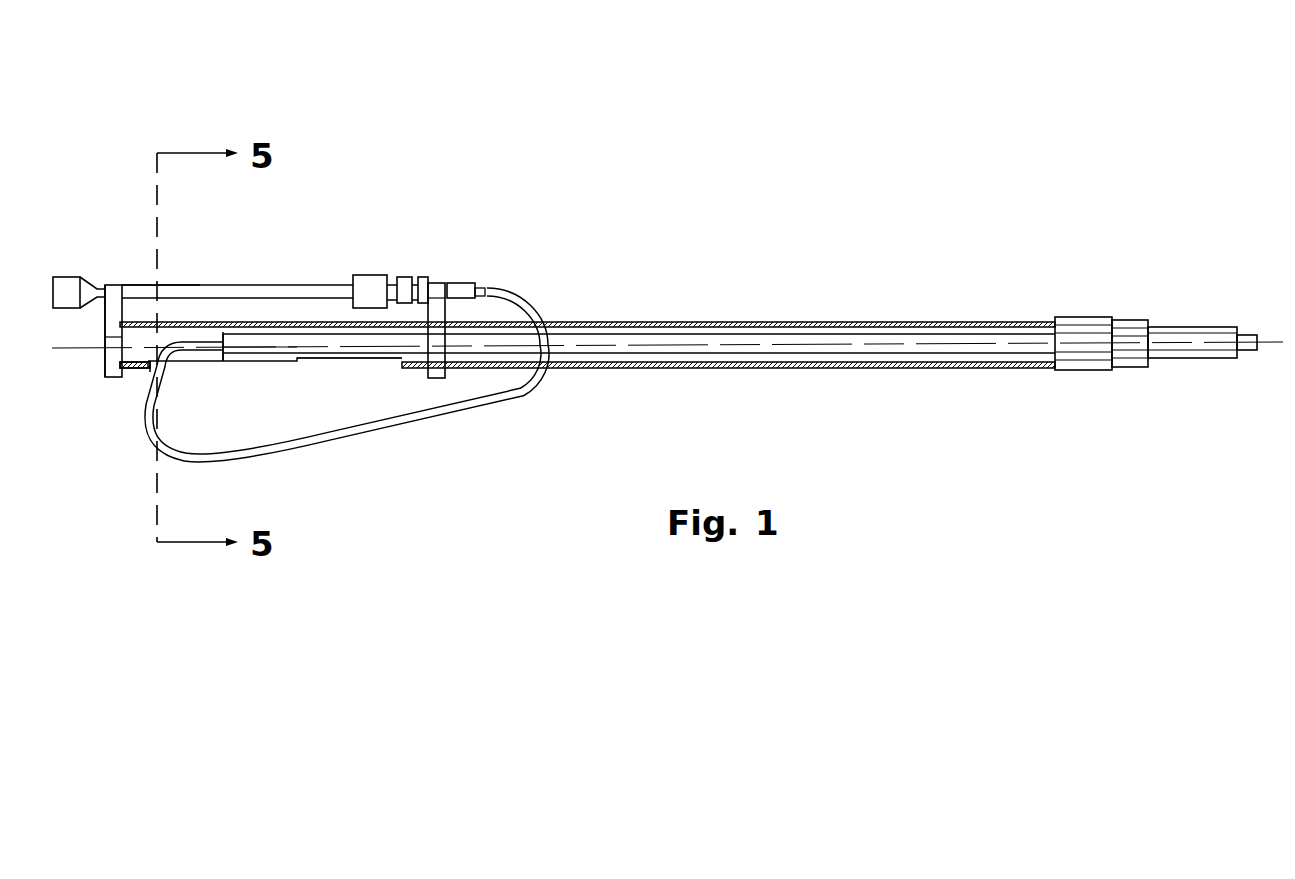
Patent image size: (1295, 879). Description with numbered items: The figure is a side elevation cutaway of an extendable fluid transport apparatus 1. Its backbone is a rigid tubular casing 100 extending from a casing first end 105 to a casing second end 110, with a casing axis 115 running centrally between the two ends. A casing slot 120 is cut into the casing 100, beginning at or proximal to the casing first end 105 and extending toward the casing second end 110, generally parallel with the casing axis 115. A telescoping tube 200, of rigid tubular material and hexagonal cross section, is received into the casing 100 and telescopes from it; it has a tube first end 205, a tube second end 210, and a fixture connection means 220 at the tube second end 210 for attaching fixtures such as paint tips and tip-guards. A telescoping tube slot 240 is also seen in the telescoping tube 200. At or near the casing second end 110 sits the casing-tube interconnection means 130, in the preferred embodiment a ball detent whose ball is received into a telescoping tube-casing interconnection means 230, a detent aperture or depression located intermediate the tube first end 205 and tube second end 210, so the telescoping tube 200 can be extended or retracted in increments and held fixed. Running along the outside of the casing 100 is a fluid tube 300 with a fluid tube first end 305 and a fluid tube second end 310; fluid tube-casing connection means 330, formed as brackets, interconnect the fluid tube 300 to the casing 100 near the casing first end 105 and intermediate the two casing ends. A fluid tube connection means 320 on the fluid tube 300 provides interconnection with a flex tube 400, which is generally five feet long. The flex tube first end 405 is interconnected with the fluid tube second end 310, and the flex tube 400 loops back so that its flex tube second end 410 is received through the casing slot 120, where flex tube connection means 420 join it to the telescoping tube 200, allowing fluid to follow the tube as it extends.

The extendable fluid transport apparatus 1 is at (952, 138).
The tubular casing 100 is at (767, 322).
The casing first end 105 is at (140, 375).
The casing second end 110 is at (980, 322).
The casing axis 115 is at (92, 347).
The casing slot 120 is at (317, 363).
The casing-tube interconnection means 130 is at (1045, 368).
The telescoping tube 200 is at (750, 355).
The tube first end 205 is at (228, 365).
The tube second end 210 is at (1227, 330).
The fixture connection means 220 is at (1252, 335).
The telescoping tube-casing interconnection means 230 is at (1083, 370).
The telescoping tube slot 240 is at (295, 360).
The fluid tube 300 is at (262, 287).
The fluid tube first end 305 is at (157, 287).
The fluid tube second end 310 is at (330, 285).
The fluid tube connection means 320 is at (63, 284).
The fluid tube-casing connection means 330 is at (112, 378).
The flex tube 400 is at (325, 443).
The flex tube first end 405 is at (497, 286).
The flex tube second end 410 is at (145, 420).
The flex tube connection means 420 is at (397, 277).